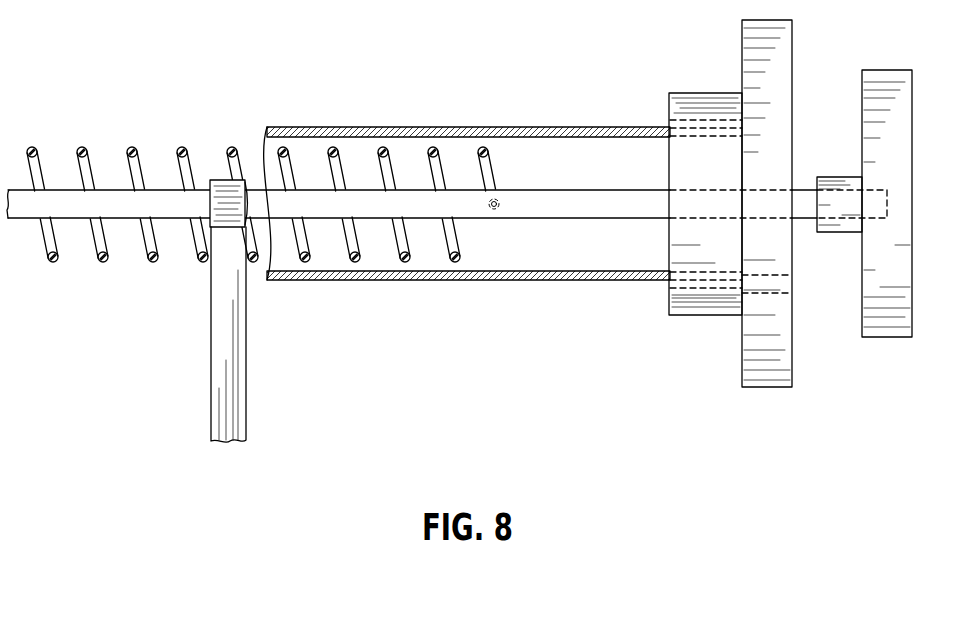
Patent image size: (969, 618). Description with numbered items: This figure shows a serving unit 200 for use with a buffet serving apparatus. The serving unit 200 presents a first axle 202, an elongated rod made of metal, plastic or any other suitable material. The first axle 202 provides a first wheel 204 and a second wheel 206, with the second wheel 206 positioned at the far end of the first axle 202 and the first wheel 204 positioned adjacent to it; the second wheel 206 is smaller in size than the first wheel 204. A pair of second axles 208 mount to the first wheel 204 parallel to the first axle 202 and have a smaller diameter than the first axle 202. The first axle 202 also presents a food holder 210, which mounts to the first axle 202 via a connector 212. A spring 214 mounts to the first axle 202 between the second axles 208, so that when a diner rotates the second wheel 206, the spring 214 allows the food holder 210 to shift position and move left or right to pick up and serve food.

The serving unit 200 is at (284, 68).
The first axle 202 is at (803, 216).
The first wheel 204 is at (766, 374).
The second wheel 206 is at (888, 329).
The second axles 208 is at (607, 129).
The food holder 210 is at (230, 377).
The connector 212 is at (222, 196).
The spring 214 is at (446, 253).